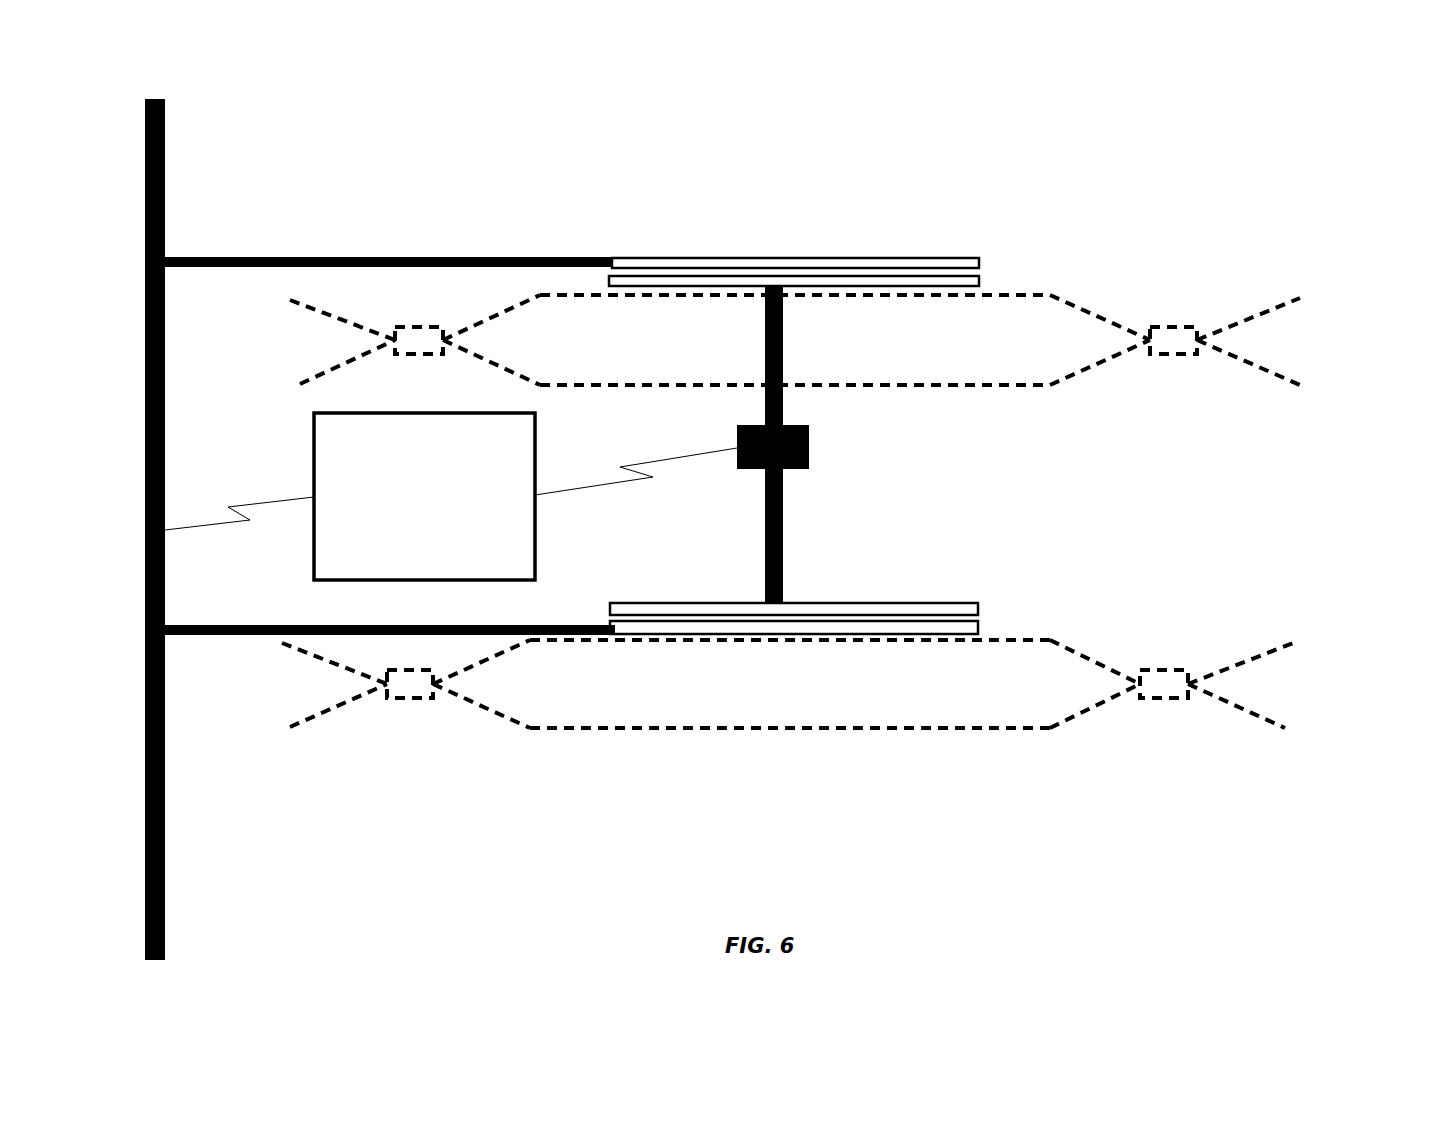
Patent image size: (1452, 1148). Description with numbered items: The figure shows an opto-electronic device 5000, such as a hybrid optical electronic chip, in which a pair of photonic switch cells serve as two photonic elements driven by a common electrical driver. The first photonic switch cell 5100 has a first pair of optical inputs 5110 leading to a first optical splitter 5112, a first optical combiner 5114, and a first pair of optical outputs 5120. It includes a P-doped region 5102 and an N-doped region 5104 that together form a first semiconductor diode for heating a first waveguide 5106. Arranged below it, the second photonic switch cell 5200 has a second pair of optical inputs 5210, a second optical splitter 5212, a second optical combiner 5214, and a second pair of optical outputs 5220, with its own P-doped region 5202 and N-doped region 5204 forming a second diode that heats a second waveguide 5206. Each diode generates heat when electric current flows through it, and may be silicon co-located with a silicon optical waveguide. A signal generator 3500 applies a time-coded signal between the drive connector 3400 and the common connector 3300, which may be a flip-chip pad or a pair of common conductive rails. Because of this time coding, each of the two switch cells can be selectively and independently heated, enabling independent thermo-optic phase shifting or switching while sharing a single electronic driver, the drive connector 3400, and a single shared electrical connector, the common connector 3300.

The common connector 3300 is at (166, 160).
The drive connector 3400 is at (809, 469).
The signal generator 3500 is at (451, 496).
The opto-electronic device 5000 is at (830, 185).
The first photonic switch cell 5100 is at (809, 279).
The P-doped region 5102 is at (968, 258).
The N-doped region 5104 is at (982, 280).
The first waveguide 5106 is at (597, 295).
The first pair of optical inputs 5110 is at (352, 358).
The first optical splitter 5112 is at (410, 327).
The first optical combiner 5114 is at (1173, 327).
The first pair of optical outputs 5120 is at (1253, 322).
The second photonic switch cell 5200 is at (790, 674).
The P-doped region 5202 is at (970, 603).
The N-doped region 5204 is at (985, 622).
The second waveguide 5206 is at (500, 653).
The second pair of optical inputs 5210 is at (312, 656).
The second optical splitter 5212 is at (408, 692).
The second optical combiner 5214 is at (1167, 698).
The second pair of optical outputs 5220 is at (1243, 665).